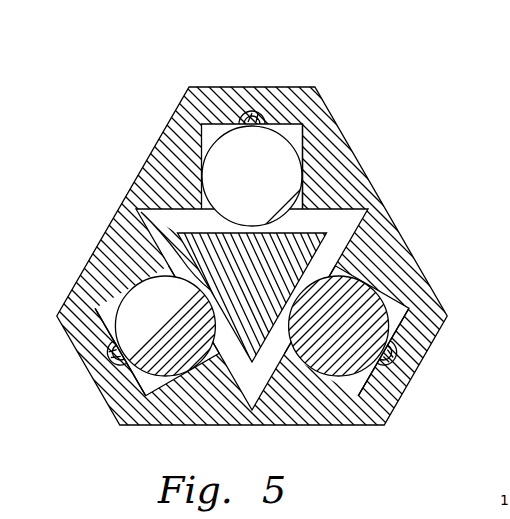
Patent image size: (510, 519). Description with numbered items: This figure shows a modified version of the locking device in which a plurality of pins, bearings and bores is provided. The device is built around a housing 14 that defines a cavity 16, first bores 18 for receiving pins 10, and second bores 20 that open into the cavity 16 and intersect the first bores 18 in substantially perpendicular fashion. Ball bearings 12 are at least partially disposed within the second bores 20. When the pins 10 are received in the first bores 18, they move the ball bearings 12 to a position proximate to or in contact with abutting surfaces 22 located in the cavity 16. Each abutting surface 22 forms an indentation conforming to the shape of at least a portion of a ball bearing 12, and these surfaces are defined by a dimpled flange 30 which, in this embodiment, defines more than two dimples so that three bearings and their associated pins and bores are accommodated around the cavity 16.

The pin 10 is at (247, 114).
The ball bearing 12 is at (280, 168).
The housing 14 is at (176, 150).
The cavity 16 is at (352, 228).
The first bore 18 is at (257, 122).
The second bore 20 is at (300, 125).
The abutting surface 22 is at (171, 200).
The dimpled flange 30 is at (270, 378).